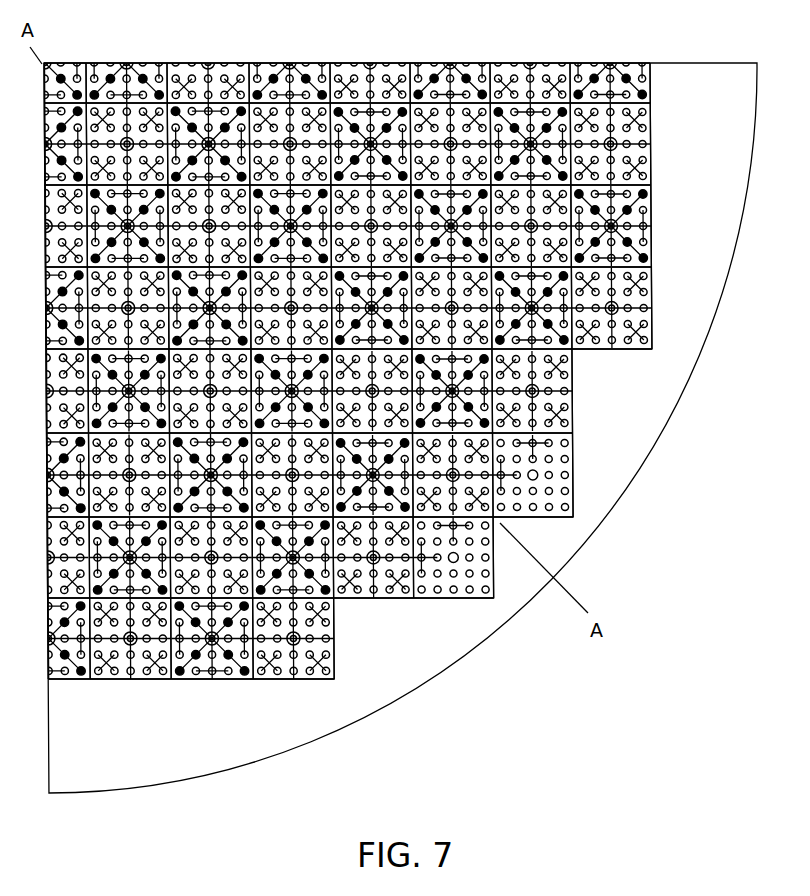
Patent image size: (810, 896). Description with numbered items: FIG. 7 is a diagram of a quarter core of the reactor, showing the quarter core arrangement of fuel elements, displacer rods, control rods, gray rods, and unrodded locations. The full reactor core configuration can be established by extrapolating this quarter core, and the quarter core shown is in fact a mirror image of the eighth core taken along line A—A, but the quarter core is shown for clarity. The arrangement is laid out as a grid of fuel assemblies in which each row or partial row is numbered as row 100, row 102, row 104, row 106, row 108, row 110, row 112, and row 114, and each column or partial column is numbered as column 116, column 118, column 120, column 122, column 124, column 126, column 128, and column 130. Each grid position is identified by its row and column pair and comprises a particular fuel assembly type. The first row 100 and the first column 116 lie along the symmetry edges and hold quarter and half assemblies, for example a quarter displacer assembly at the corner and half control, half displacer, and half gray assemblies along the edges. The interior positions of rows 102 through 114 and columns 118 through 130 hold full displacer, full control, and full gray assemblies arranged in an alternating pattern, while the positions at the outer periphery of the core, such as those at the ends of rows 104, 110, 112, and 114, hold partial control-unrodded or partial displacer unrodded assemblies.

The row of fuel assemblies 100 is at (652, 88).
The row of fuel assemblies 102 is at (652, 160).
The row of fuel assemblies 104 is at (652, 230).
The row of fuel assemblies 106 is at (652, 305).
The row of fuel assemblies 108 is at (572, 418).
The row of fuel assemblies 110 is at (572, 473).
The row of fuel assemblies 112 is at (492, 577).
The row of fuel assemblies 114 is at (332, 667).
The column of fuel assemblies 116 is at (53, 63).
The column of fuel assemblies 118 is at (112, 63).
The column of fuel assemblies 120 is at (188, 63).
The column of fuel assemblies 122 is at (280, 63).
The column of fuel assemblies 124 is at (360, 63).
The column of fuel assemblies 126 is at (440, 63).
The column of fuel assemblies 128 is at (520, 63).
The column of fuel assemblies 130 is at (603, 63).